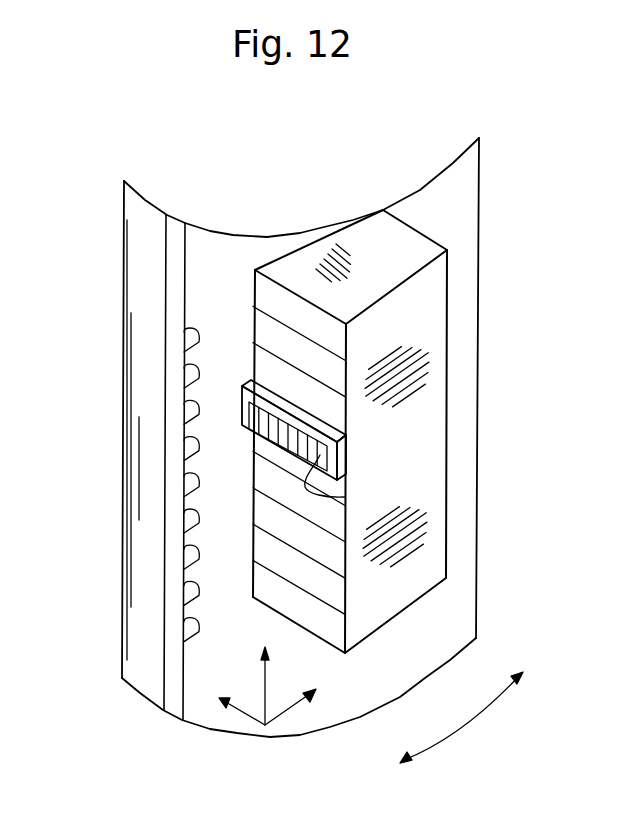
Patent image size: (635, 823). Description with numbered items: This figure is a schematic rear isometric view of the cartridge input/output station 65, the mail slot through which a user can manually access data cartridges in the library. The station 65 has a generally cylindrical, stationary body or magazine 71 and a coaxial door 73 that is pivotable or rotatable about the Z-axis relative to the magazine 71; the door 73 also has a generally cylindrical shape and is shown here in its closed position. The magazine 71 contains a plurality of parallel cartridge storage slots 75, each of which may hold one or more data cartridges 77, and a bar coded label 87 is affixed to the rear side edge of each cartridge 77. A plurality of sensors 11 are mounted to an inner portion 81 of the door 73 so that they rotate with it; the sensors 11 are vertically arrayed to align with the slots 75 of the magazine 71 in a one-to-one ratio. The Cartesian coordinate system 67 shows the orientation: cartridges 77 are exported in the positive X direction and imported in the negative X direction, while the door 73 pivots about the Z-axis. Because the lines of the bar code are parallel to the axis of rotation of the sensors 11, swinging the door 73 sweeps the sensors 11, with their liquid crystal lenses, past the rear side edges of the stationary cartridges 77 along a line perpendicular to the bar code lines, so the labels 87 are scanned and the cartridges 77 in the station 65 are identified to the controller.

The cartridge input/output station 65 is at (288, 202).
The magazine 71 is at (418, 322).
The data cartridge 77 is at (340, 456).
The bar coded label 87 is at (345, 497).
The cartridge storage slot 75 is at (325, 593).
The Cartesian coordinate system 67 is at (284, 682).
The door 73 is at (237, 733).
The inner portion of door 81 is at (175, 295).
The sensor 11 is at (190, 594).